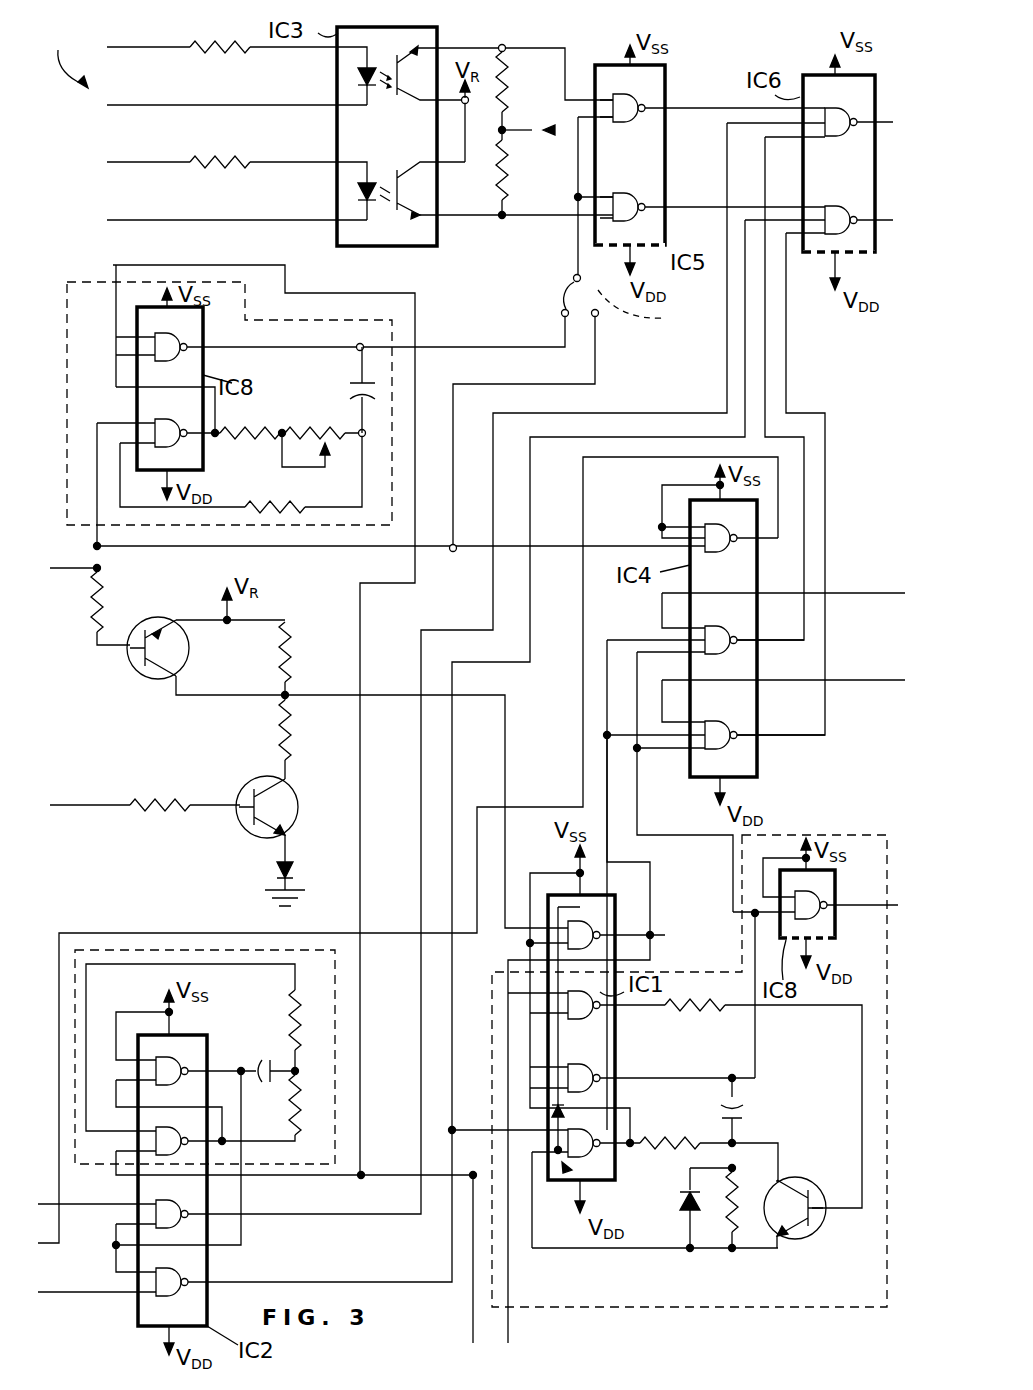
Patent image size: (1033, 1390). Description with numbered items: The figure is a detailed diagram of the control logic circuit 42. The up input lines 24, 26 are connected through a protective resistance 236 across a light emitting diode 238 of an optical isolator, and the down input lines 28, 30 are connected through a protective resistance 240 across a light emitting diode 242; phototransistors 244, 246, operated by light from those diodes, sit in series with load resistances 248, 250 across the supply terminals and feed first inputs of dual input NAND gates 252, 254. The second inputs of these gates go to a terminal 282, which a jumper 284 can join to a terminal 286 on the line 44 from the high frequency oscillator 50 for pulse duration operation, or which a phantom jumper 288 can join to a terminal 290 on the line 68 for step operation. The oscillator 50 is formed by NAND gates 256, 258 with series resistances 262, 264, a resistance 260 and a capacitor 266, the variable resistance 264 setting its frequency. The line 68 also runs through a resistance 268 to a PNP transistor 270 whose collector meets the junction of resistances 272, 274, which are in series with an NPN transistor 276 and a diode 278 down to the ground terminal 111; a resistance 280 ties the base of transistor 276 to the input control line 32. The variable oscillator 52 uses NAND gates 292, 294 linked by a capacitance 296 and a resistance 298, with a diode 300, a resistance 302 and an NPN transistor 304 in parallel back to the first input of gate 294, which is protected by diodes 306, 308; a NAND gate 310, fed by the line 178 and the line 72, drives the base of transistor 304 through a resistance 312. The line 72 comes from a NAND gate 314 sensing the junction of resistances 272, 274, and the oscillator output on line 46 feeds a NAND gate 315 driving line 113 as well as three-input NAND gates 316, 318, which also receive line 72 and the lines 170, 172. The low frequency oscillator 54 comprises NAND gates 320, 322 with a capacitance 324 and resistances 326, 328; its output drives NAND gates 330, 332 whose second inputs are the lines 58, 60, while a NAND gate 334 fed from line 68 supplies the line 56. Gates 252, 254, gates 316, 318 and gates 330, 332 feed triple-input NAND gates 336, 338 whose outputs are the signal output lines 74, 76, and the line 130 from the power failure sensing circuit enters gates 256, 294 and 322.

The control logic circuit 42 is at (65, 55).
The up input line 24 is at (163, 48).
The up input line 26 is at (160, 106).
The down input line 28 is at (158, 164).
The down input line 30 is at (158, 221).
The protective resistance 236 is at (234, 49).
The light emitting diode 238 is at (358, 74).
The protective resistance 240 is at (229, 164).
The light emitting diode 242 is at (358, 188).
The phototransistor 244 is at (435, 54).
The phototransistor 246 is at (424, 184).
The load resistance 248 is at (510, 75).
The load resistance 250 is at (512, 169).
The dual input NAND gate 252 is at (642, 100).
The dual input NAND gate 254 is at (642, 194).
The signal output line 74 is at (878, 120).
The signal output line 76 is at (882, 224).
The triple-input NAND gate 336 is at (792, 141).
The triple-input NAND gate 338 is at (801, 204).
The terminal 282 is at (574, 274).
The jumper 284 is at (573, 297).
The terminal 286 is at (560, 320).
The jumper 288 is at (651, 310).
The terminal 290 is at (598, 318).
The line 44 is at (448, 350).
The high frequency oscillator 50 is at (393, 348).
The line 130 is at (332, 293).
The dual input NAND gate 256 is at (178, 337).
The dual input NAND gate 258 is at (150, 423).
The series resistance 262 is at (228, 437).
The variable resistance 264 is at (340, 436).
The resistance 260 is at (247, 508).
The capacitor 266 is at (348, 378).
The line 68 is at (62, 568).
The resistance 268 is at (100, 587).
The PNP transistor 270 is at (130, 658).
The resistance 272 is at (270, 672).
The resistance 274 is at (276, 750).
The NPN transistor 276 is at (288, 792).
The diode 278 is at (294, 866).
The resistance 280 is at (138, 808).
The input control line 32 is at (90, 806).
The ground terminal 111 is at (266, 894).
The NAND gate 334 is at (740, 557).
The three-input NAND gate 316 is at (704, 878).
The three-input NAND gate 318 is at (738, 745).
The line 170 is at (853, 593).
The line 172 is at (872, 684).
The variable oscillator 52 is at (851, 834).
The line 46 is at (710, 840).
The NAND gate 315 is at (820, 916).
The line 113 is at (878, 904).
The NAND gate 314 is at (604, 920).
The line 72 is at (650, 941).
The NAND gate 310 is at (600, 1010).
The resistance 312 is at (688, 1014).
The dual input NAND gate 292 is at (602, 1082).
The capacitance 296 is at (756, 1114).
The dual input NAND gate 294 is at (592, 1160).
The diode 308 is at (608, 1112).
The resistance 298 is at (684, 1174).
The diode 300 is at (682, 1248).
The resistance 302 is at (738, 1248).
The NPN transistor 304 is at (802, 1192).
The diode 306 is at (562, 1232).
The line 178 is at (510, 1326).
The line 56 is at (60, 972).
The low frequency oscillator 54 is at (295, 953).
The resistance 326 is at (288, 1004).
The resistance 328 is at (300, 1103).
The capacitance 324 is at (275, 1058).
The NAND gate 320 is at (170, 1059).
The NAND gate 322 is at (150, 1149).
The NAND gate 330 is at (188, 1208).
The NAND gate 332 is at (188, 1276).
The line 58 is at (74, 1206).
The line 60 is at (92, 1293).